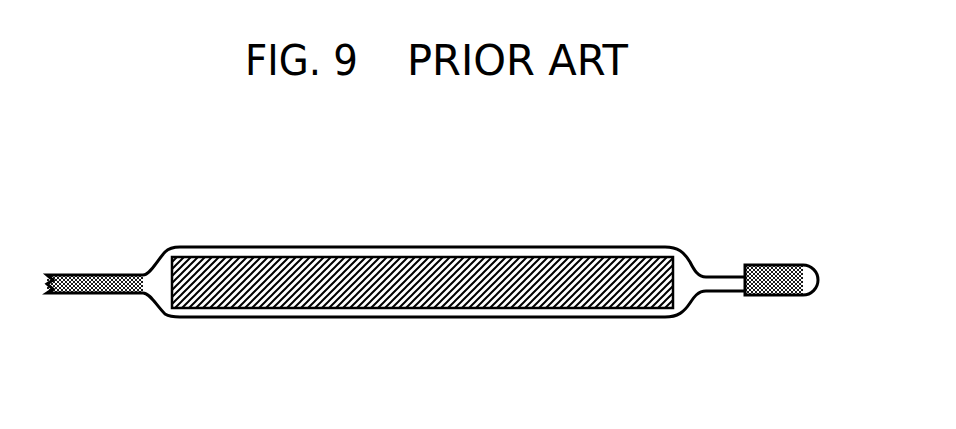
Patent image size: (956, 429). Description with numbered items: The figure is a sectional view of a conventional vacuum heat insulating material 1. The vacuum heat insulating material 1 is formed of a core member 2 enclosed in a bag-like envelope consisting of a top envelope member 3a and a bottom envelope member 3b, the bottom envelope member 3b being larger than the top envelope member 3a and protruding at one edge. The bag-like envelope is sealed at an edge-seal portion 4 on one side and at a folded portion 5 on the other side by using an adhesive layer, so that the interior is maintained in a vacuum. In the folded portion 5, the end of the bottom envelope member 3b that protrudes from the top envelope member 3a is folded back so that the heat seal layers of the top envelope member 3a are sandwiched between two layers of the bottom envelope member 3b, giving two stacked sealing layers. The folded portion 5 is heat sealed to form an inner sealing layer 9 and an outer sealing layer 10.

The vacuum heat insulating material 1 is at (456, 276).
The core member 2 is at (411, 280).
The top envelope member 3a is at (377, 243).
The bottom envelope member 3b is at (523, 318).
The edge-seal portion 4 is at (100, 293).
The folded portion 5 is at (825, 272).
The inner sealing layer 9 is at (768, 294).
The outer sealing layer 10 is at (769, 265).